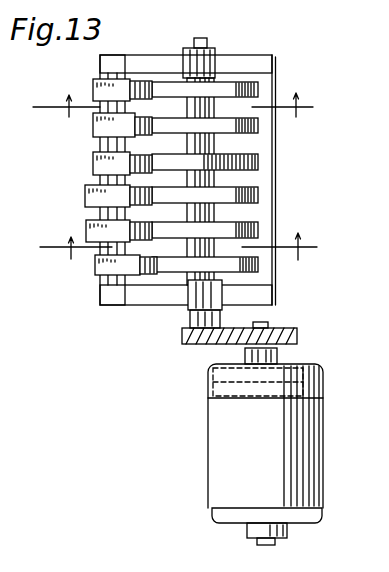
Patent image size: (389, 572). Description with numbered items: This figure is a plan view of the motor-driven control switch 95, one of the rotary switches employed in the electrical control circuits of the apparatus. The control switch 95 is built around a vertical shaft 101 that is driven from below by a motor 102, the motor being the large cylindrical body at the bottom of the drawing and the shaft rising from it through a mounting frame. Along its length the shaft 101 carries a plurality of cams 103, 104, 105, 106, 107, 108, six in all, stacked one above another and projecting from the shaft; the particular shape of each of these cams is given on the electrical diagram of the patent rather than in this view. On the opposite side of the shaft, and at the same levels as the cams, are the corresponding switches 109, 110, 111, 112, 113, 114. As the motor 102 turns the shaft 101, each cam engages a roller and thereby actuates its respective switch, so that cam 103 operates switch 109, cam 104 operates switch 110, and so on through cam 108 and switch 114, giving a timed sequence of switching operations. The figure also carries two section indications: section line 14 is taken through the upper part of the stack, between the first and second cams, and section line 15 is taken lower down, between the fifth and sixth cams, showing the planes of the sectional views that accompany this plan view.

The section line 14- 14 is at (183, 105).
The section line 15- 15 is at (189, 246).
The motor-driven control switch 95 is at (258, 54).
The shaft 101 is at (203, 43).
The motor 102 is at (218, 447).
The cam 103 is at (258, 90).
The cam 104 is at (258, 128).
The cam 105 is at (258, 162).
The cam 106 is at (258, 194).
The cam 107 is at (258, 231).
The cam 108 is at (258, 266).
The switch 109 is at (93, 84).
The switch 110 is at (93, 128).
The switch 111 is at (93, 163).
The switch 112 is at (86, 196).
The switch 113 is at (88, 228).
The switch 114 is at (95, 266).